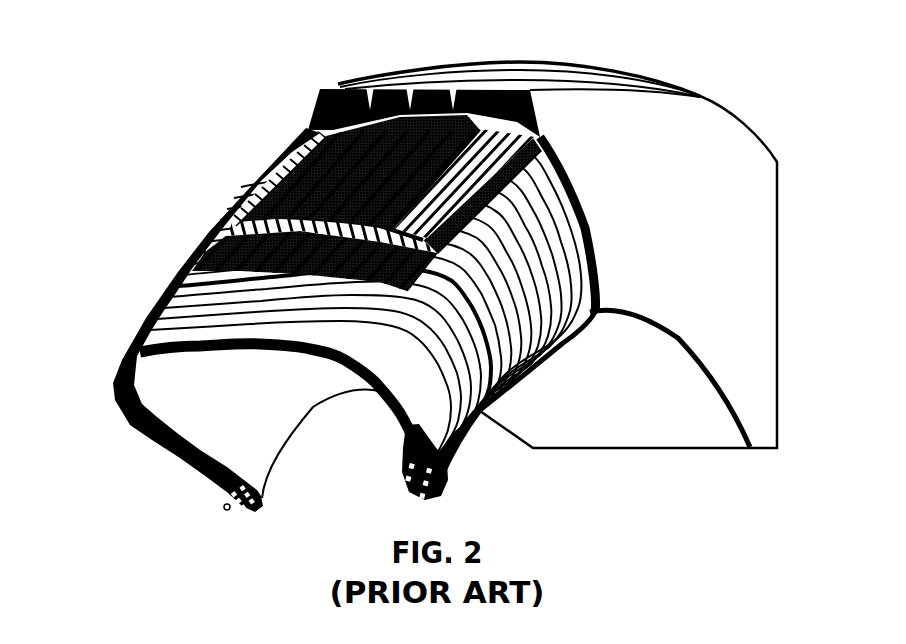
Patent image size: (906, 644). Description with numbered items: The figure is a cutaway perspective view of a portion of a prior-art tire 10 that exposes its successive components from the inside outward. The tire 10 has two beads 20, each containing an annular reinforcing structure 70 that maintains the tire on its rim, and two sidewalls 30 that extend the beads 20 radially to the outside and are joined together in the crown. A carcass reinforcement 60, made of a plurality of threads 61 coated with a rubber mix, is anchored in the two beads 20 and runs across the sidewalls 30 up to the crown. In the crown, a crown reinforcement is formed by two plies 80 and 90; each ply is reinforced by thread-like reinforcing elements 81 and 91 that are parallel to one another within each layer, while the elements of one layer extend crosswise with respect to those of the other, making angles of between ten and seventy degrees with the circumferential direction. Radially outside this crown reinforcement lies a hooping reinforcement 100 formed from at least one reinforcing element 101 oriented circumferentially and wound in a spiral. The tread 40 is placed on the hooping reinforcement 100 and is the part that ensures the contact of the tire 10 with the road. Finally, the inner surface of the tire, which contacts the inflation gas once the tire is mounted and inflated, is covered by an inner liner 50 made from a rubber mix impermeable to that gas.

The tire 10 is at (141, 116).
The bead 20 is at (430, 498).
The sidewall 30 is at (672, 226).
The tread 40 is at (320, 93).
The inner liner 50 is at (215, 421).
The carcass reinforcement 60 is at (155, 316).
The thread 61 is at (150, 333).
The annular reinforcing structure 70 is at (224, 512).
The ply 80 is at (187, 268).
The reinforcing element 81 is at (206, 240).
The ply 90 is at (220, 216).
The reinforcing element 91 is at (232, 200).
The hooping reinforcement 100 is at (268, 170).
The reinforcing element 101 is at (302, 146).